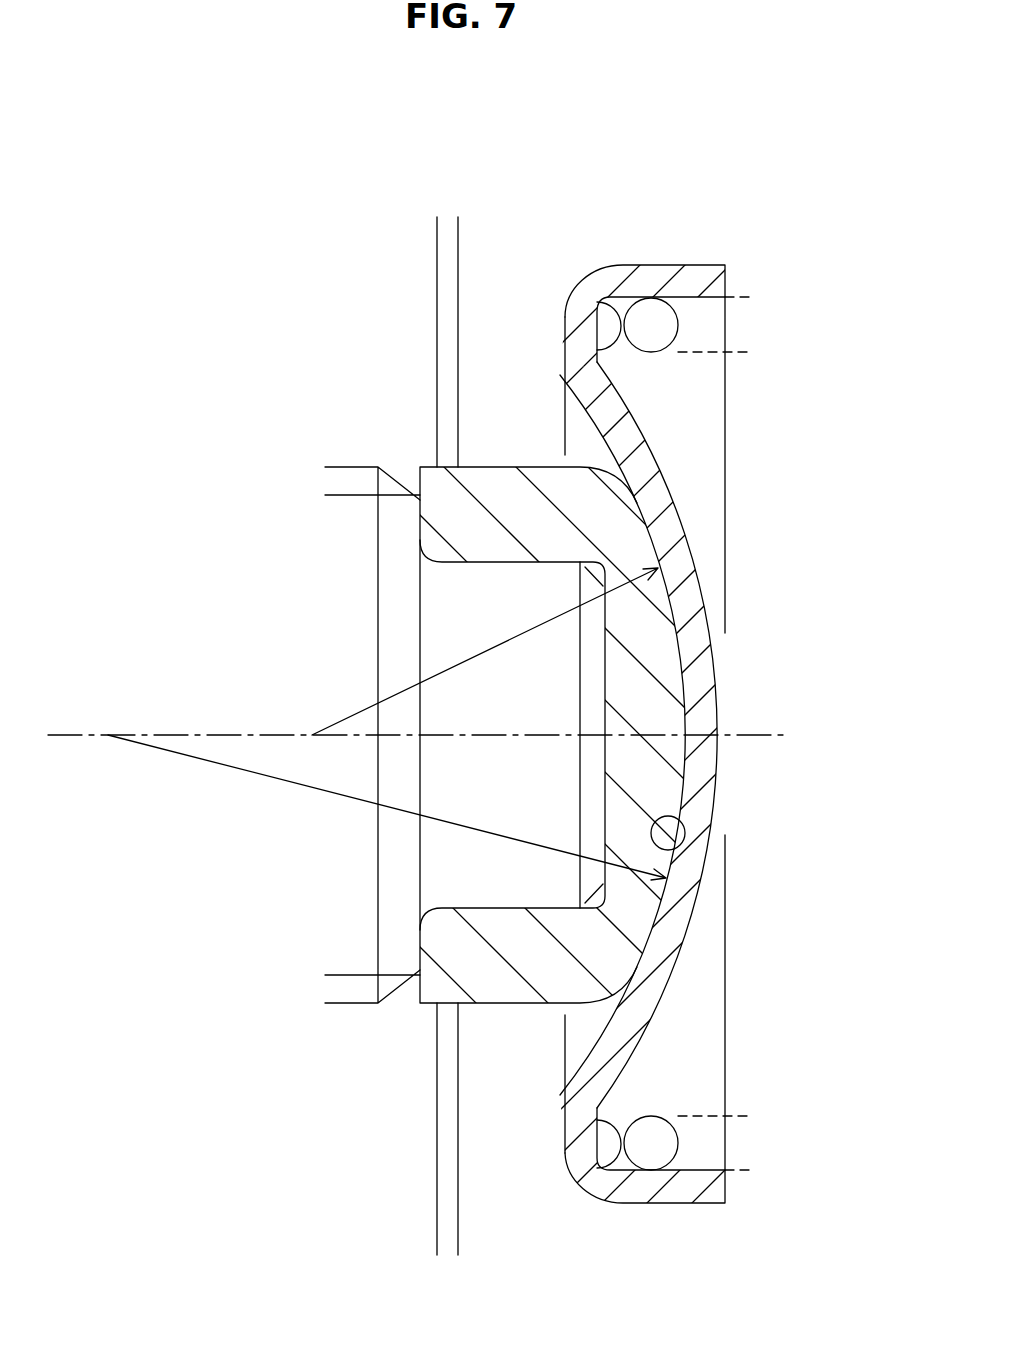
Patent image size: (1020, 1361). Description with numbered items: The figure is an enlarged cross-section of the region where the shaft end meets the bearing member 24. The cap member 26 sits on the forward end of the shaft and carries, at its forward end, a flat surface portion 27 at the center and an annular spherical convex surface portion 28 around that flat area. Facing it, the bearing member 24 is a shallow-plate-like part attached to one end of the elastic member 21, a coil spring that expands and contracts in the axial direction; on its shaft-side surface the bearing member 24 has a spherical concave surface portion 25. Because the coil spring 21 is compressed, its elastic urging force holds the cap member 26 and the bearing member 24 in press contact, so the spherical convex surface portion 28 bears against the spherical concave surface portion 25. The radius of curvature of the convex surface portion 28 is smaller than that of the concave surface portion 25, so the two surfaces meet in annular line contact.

The elastic member 21 is at (652, 1150).
The bearing member 24 is at (718, 767).
The spherical concave surface portion 25 is at (695, 814).
The cap member 26 is at (492, 450).
The flat surface portion 27 is at (702, 706).
The spherical convex surface portion 28 is at (668, 595).